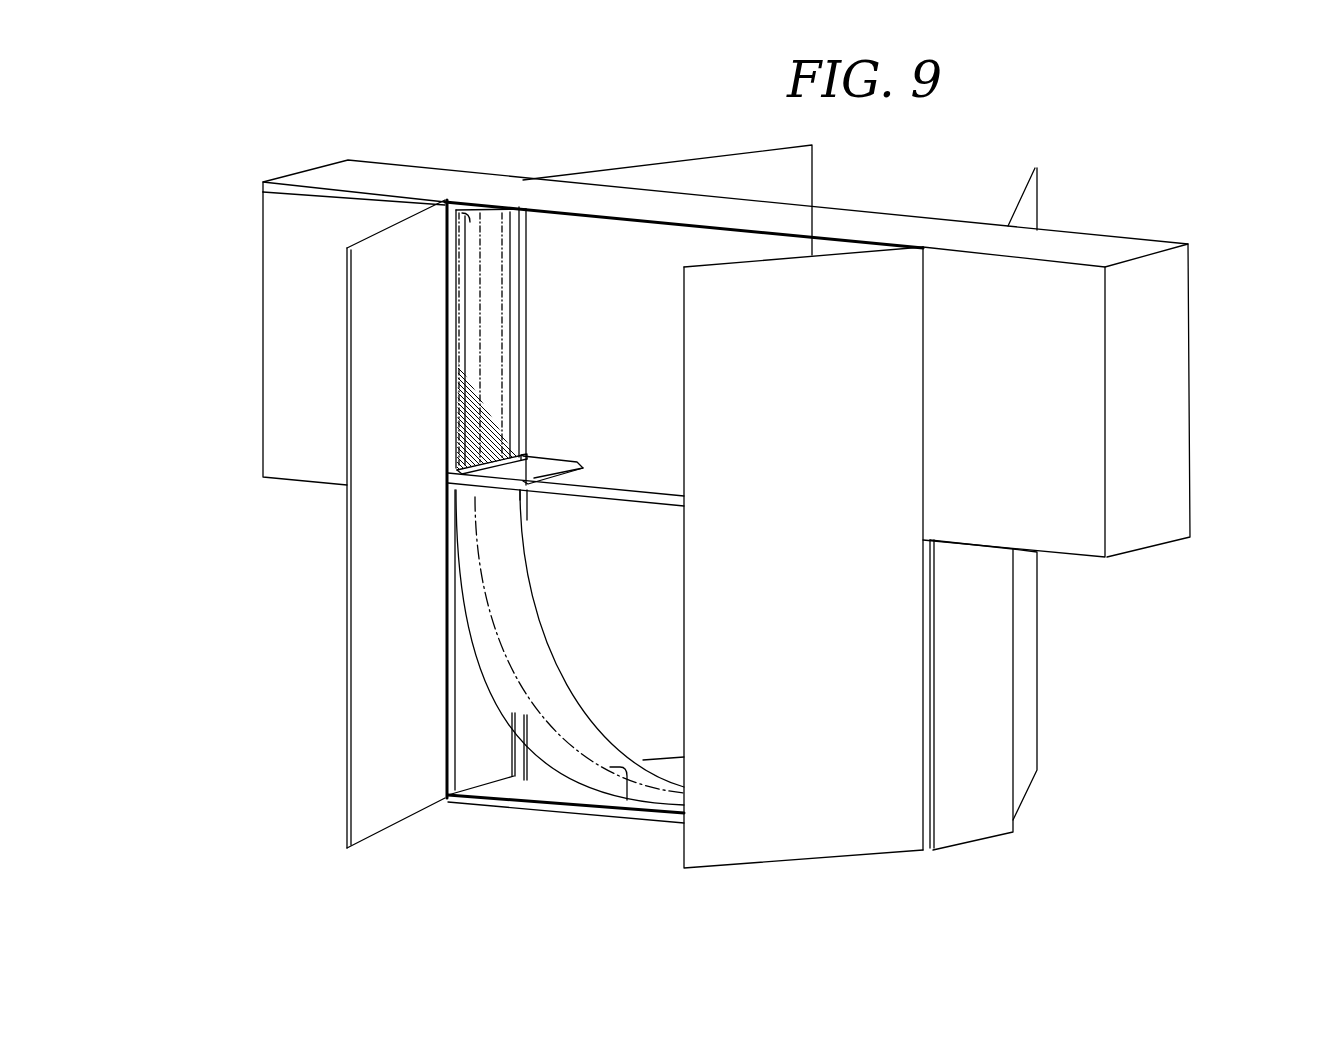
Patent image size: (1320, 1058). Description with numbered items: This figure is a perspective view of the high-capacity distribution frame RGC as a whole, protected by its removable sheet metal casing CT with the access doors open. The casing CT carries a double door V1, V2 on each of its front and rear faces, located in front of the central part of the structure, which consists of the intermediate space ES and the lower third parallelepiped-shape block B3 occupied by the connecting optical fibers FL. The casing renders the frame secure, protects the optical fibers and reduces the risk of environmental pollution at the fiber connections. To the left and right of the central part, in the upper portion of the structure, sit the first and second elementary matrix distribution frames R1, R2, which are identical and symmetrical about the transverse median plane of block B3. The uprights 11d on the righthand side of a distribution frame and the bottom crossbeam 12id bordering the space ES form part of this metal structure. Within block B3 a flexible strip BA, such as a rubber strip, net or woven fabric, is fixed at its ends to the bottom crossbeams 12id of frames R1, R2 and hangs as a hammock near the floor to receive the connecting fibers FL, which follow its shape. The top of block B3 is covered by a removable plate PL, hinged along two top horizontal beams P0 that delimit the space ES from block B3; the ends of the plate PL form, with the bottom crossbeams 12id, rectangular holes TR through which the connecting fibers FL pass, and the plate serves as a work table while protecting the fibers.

The righthand uprights 11d is at (523, 243).
The righthand bottom crossbeam 12id is at (525, 455).
The rectangular holes TR is at (532, 480).
The removable plate PL is at (645, 490).
The top horizontal beams P0 is at (608, 500).
The intermediate space ES is at (557, 499).
The third parallelepiped-shape block B3 is at (570, 647).
The flexible strip BA is at (567, 757).
The connecting optical fibers FL is at (627, 800).
The first door of double door V1 is at (800, 170).
The second door of double door V2 is at (1032, 198).
The removable sheet metal casing CT is at (925, 235).
The first elementary matrix distribution frame R1 is at (278, 322).
The second elementary matrix distribution frame R2 is at (1182, 398).
The high-capacity distribution frame RGC is at (1214, 769).